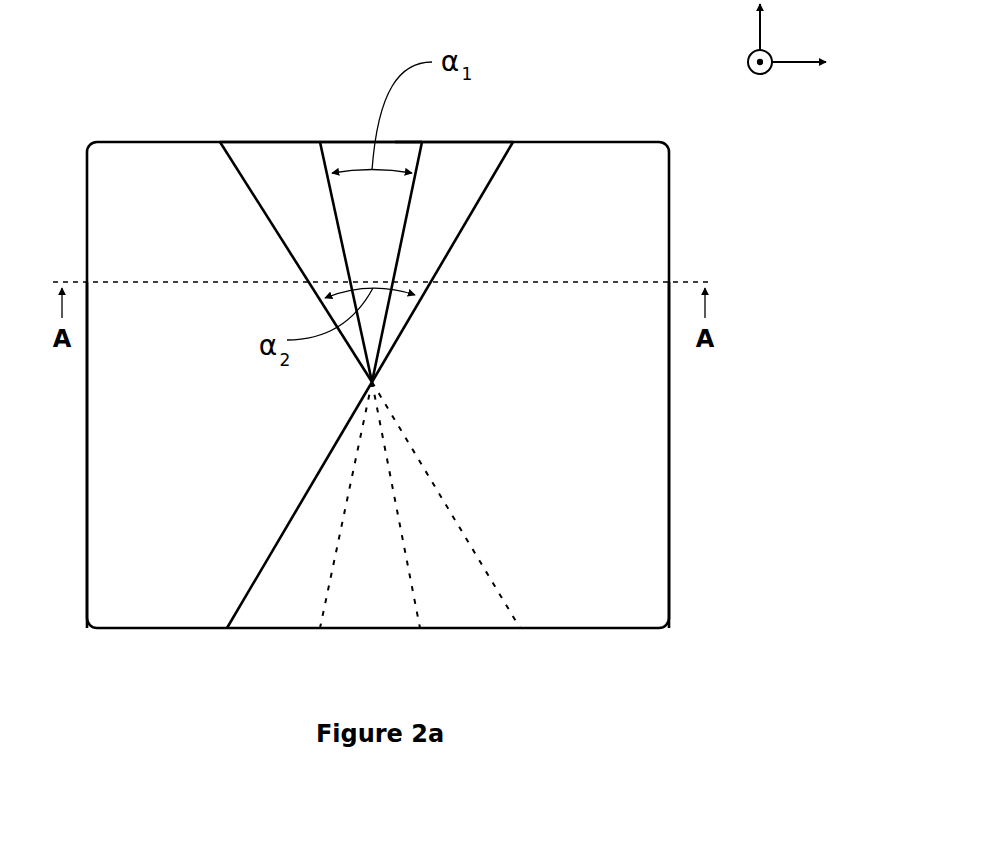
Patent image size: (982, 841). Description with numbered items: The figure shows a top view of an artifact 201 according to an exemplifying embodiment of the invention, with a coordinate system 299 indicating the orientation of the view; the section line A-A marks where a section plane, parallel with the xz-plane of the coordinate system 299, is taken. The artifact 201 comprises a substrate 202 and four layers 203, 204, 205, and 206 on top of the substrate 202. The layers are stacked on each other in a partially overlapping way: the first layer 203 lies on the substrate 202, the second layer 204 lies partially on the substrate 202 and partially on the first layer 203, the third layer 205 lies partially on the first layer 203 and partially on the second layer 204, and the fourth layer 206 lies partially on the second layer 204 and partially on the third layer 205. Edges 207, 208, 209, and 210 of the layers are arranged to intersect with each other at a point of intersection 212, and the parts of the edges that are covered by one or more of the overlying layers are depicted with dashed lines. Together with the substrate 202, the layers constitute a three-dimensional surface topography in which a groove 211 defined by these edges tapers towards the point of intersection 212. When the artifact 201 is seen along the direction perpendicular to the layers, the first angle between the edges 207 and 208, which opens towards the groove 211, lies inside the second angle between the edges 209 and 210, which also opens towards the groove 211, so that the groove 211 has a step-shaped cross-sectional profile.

The artifact 201 is at (224, 96).
The substrate 202 is at (352, 228).
The first layer 203 is at (262, 180).
The second layer 204 is at (430, 183).
The third layer 205 is at (178, 406).
The fourth layer 206 is at (537, 436).
The edge 207 is at (343, 257).
The edge 208 is at (399, 257).
The edge 209 is at (292, 257).
The edge 210 is at (450, 250).
The groove 211 is at (397, 155).
The point of intersection 212 is at (376, 382).
The coordinate system 299 is at (778, 39).